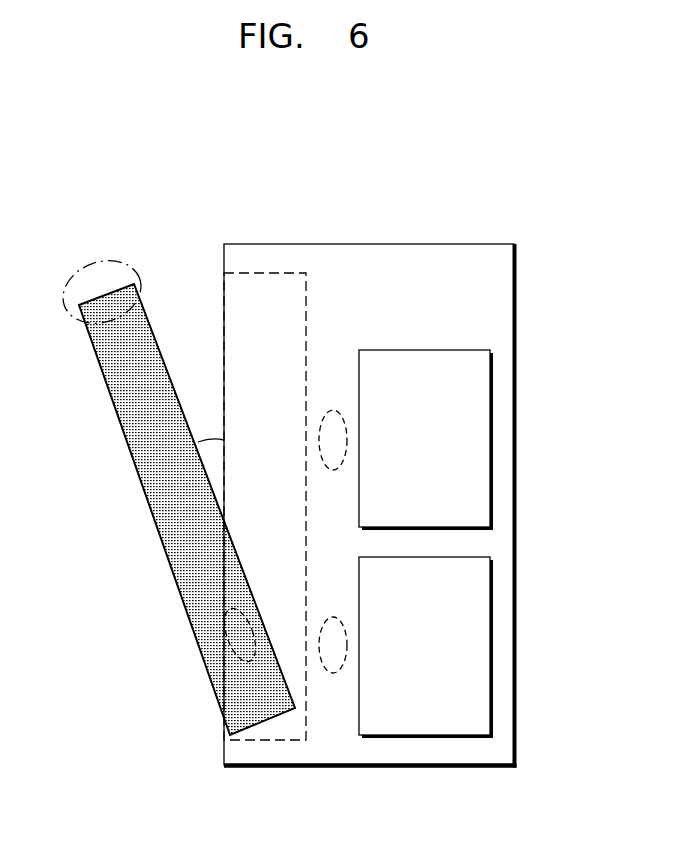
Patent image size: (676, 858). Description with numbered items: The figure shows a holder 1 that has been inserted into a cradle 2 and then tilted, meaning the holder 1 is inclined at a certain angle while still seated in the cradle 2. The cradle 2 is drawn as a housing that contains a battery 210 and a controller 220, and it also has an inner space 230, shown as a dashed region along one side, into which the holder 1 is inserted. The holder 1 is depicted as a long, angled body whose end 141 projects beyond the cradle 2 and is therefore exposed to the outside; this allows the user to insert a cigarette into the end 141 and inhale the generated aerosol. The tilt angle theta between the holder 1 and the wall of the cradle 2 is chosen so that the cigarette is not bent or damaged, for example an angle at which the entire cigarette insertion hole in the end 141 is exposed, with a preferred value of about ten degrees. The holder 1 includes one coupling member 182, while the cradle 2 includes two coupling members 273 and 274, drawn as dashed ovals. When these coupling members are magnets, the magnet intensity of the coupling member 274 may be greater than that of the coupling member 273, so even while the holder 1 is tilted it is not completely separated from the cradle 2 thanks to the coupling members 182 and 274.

The holder 1 is at (162, 488).
The cradle 2 is at (446, 191).
The end 141 is at (78, 282).
The coupling member 182 is at (250, 663).
The battery 210 is at (492, 647).
The controller 220 is at (492, 433).
The inner space 230 is at (261, 272).
The coupling member 273 is at (333, 410).
The coupling member 274 is at (330, 673).